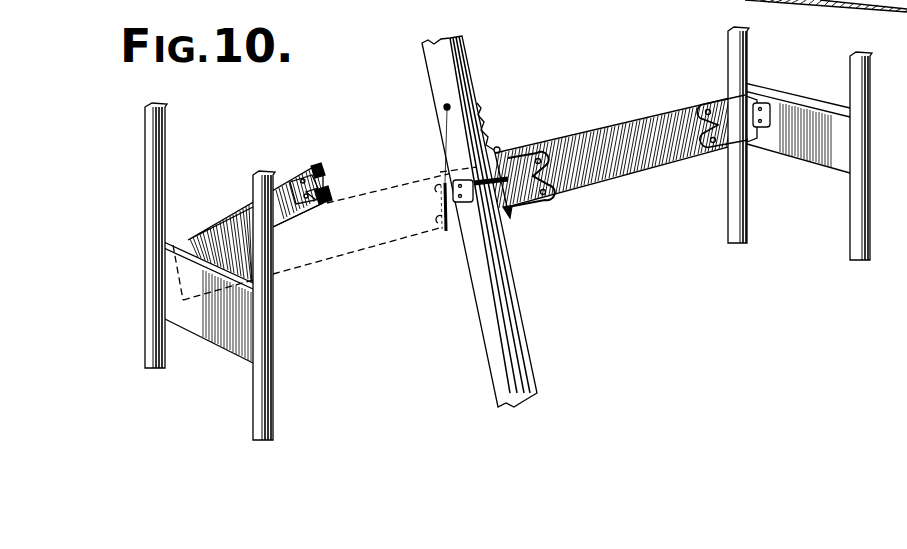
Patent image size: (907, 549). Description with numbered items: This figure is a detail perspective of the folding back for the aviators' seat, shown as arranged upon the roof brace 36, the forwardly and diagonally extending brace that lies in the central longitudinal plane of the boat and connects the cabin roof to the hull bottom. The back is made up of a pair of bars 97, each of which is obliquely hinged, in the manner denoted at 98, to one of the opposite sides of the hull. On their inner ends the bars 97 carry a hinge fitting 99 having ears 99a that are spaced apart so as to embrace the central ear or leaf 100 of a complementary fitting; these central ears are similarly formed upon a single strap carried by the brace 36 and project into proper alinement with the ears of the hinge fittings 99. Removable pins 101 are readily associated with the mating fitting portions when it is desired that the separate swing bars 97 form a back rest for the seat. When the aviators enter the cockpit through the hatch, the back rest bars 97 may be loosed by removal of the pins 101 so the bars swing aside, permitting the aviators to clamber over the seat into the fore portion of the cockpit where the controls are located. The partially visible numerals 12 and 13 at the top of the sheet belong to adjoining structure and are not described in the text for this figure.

The frame member 12 is at (528, 7).
The frame member 13 is at (638, 11).
The brace 36 is at (466, 65).
The bars 97 is at (224, 228).
The hinge 98 is at (767, 100).
The hinge fitting 99 is at (317, 163).
The ears 99a is at (328, 190).
The central ear or leaf 100 is at (447, 233).
The removable pins 101 is at (440, 210).